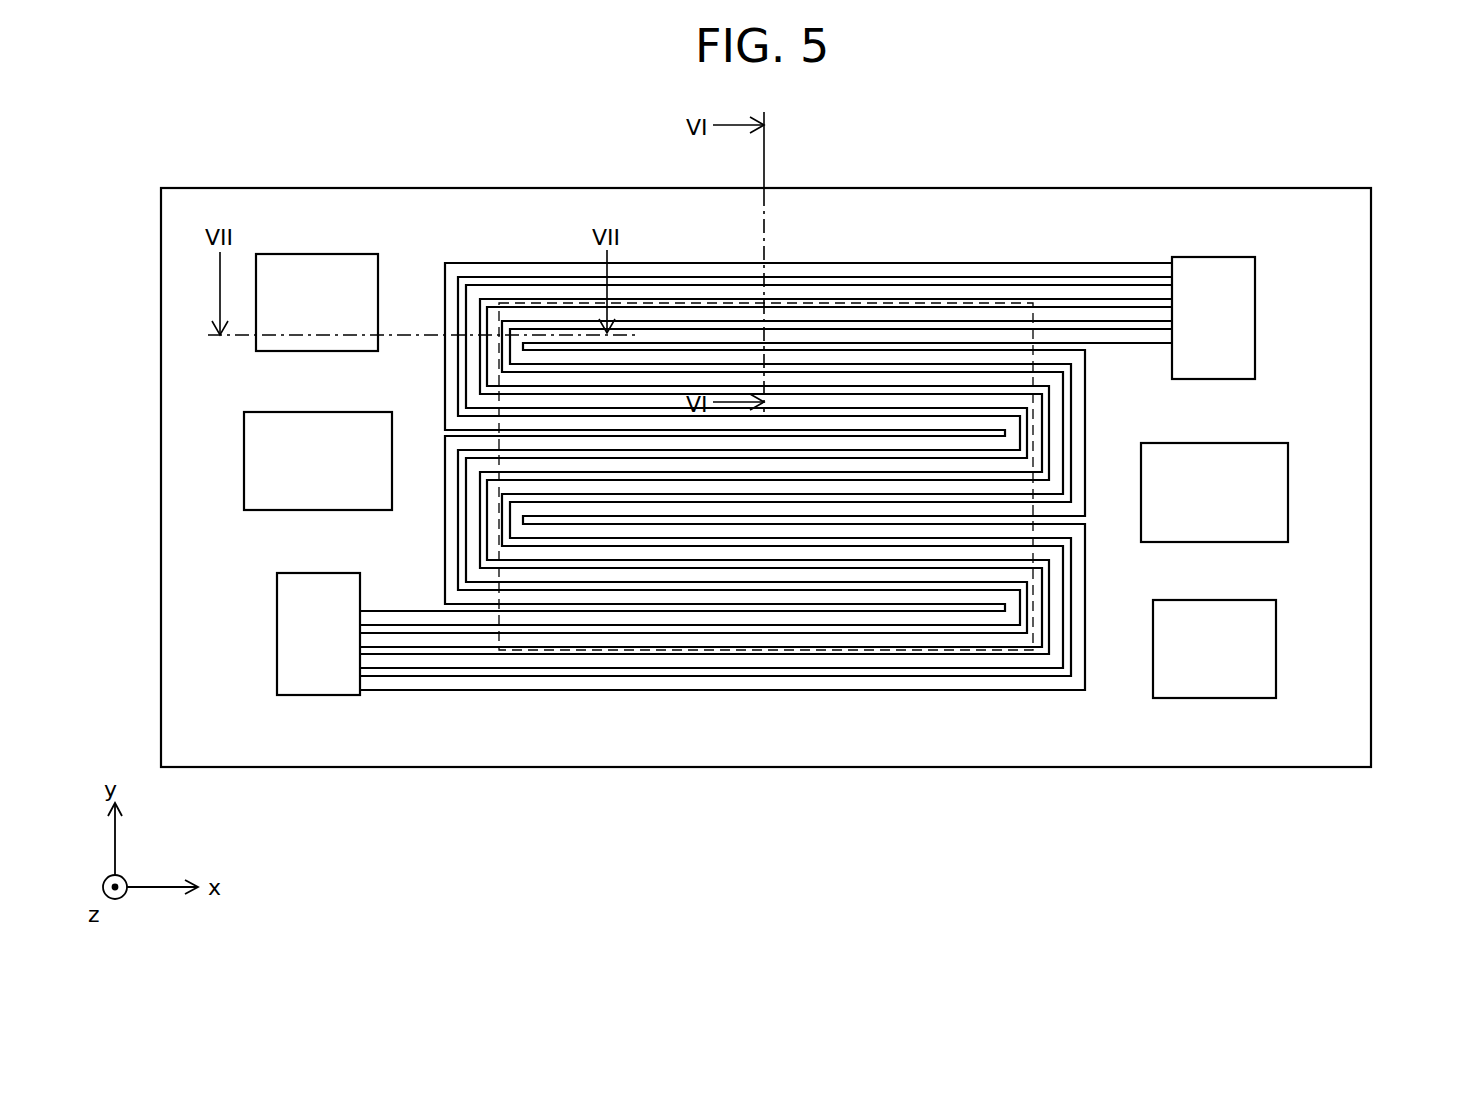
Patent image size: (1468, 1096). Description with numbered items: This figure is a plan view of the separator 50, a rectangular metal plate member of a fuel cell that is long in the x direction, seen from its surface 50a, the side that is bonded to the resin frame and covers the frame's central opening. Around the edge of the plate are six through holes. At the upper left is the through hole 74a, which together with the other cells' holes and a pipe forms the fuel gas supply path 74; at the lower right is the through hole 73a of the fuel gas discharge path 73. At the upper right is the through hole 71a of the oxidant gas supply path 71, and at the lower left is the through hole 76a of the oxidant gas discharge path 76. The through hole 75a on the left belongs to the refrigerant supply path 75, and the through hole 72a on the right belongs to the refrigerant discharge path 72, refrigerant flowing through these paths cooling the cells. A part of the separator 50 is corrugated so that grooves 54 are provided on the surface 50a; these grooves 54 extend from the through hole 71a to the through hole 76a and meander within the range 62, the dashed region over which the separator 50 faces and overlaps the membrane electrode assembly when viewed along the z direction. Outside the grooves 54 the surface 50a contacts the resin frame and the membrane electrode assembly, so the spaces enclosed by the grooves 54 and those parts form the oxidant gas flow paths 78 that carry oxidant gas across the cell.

The separator 50 is at (758, 443).
The surface 50a is at (528, 228).
The grooves 54 is at (1138, 335).
The oxidant gas flow paths 78 is at (766, 404).
The range 62 is at (770, 650).
The oxidant gas supply path 71 is at (1310, 318).
The through hole 71a is at (1242, 317).
The refrigerant discharge path 72 is at (1295, 490).
The through hole 72a is at (1274, 468).
The fuel gas discharge path 73 is at (1301, 659).
The through hole 73a is at (1263, 648).
The fuel gas supply path 74 is at (306, 234).
The through hole 74a is at (310, 272).
The refrigerant supply path 75 is at (238, 480).
The through hole 75a is at (258, 477).
The oxidant gas discharge path 76 is at (222, 637).
The through hole 76a is at (289, 633).